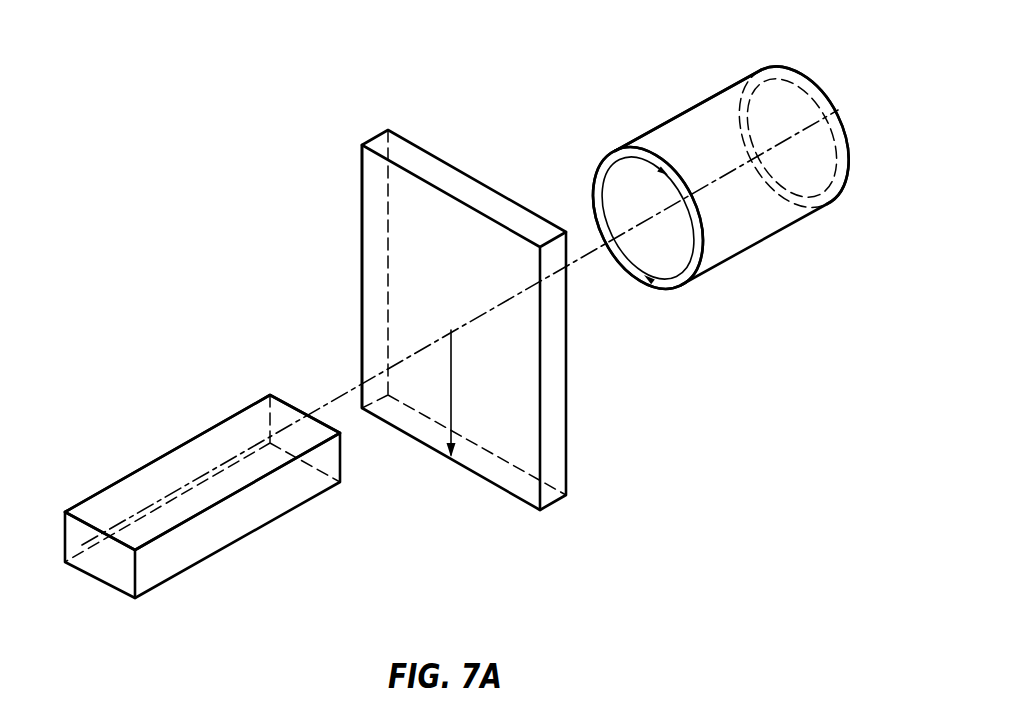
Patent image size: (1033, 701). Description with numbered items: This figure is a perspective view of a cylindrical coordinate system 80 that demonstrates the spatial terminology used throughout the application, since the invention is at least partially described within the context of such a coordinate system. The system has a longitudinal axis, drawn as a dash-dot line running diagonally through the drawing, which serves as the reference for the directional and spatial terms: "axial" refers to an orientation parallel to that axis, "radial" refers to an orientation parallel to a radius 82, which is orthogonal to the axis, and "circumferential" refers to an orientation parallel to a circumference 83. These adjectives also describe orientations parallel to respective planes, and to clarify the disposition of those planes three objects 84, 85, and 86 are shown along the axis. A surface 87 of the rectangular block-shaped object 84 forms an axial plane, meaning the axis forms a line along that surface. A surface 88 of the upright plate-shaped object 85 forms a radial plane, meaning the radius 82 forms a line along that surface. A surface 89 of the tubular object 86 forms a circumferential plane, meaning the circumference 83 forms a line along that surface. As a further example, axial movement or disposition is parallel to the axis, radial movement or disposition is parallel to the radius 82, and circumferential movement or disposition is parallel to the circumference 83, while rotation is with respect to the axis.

The cylindrical coordinate system 80 is at (312, 185).
The radius 82 is at (451, 388).
The circumference 83 is at (593, 180).
The object 84 is at (167, 587).
The object 85 is at (575, 498).
The object 86 is at (747, 253).
The surface 87 is at (157, 477).
The surface 88 is at (377, 275).
The surface 89 is at (682, 113).